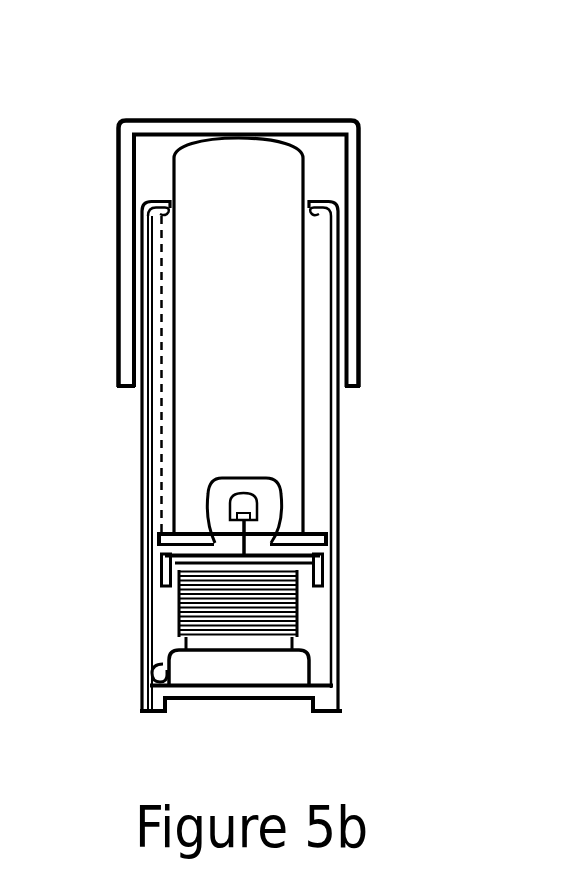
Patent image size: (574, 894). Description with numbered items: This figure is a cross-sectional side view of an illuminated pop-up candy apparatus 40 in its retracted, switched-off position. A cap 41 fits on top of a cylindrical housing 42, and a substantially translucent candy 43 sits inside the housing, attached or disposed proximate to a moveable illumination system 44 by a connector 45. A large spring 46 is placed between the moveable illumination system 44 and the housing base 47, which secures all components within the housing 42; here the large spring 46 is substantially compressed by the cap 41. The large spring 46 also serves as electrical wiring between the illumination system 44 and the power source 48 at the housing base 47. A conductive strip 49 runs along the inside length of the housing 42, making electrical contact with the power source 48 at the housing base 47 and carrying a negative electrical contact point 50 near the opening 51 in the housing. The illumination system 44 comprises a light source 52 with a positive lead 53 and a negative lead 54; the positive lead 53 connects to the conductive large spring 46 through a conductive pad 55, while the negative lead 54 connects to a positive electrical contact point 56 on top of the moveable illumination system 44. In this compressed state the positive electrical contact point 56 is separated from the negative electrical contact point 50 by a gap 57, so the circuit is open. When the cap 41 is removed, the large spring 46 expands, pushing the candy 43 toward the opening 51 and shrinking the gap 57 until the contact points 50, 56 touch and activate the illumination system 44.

The candy apparatus 40 is at (196, 103).
The cap 41 is at (285, 121).
The cylindrical housing 42 is at (341, 397).
The candy 43 is at (258, 299).
The moveable illumination system 44 is at (232, 508).
The connector 45 is at (272, 502).
The large spring 46 is at (298, 618).
The housing base 47 is at (250, 693).
The power source 48 is at (230, 670).
The conductive strip 49 is at (148, 455).
The negative electrical contact point 50 is at (148, 218).
The opening 51 is at (317, 190).
The light source 52 is at (233, 505).
The positive lead 53 is at (322, 547).
The negative lead 54 is at (233, 603).
The conductive pad 55 is at (300, 571).
The positive electrical contact point 56 is at (200, 543).
The gap 57 is at (161, 397).